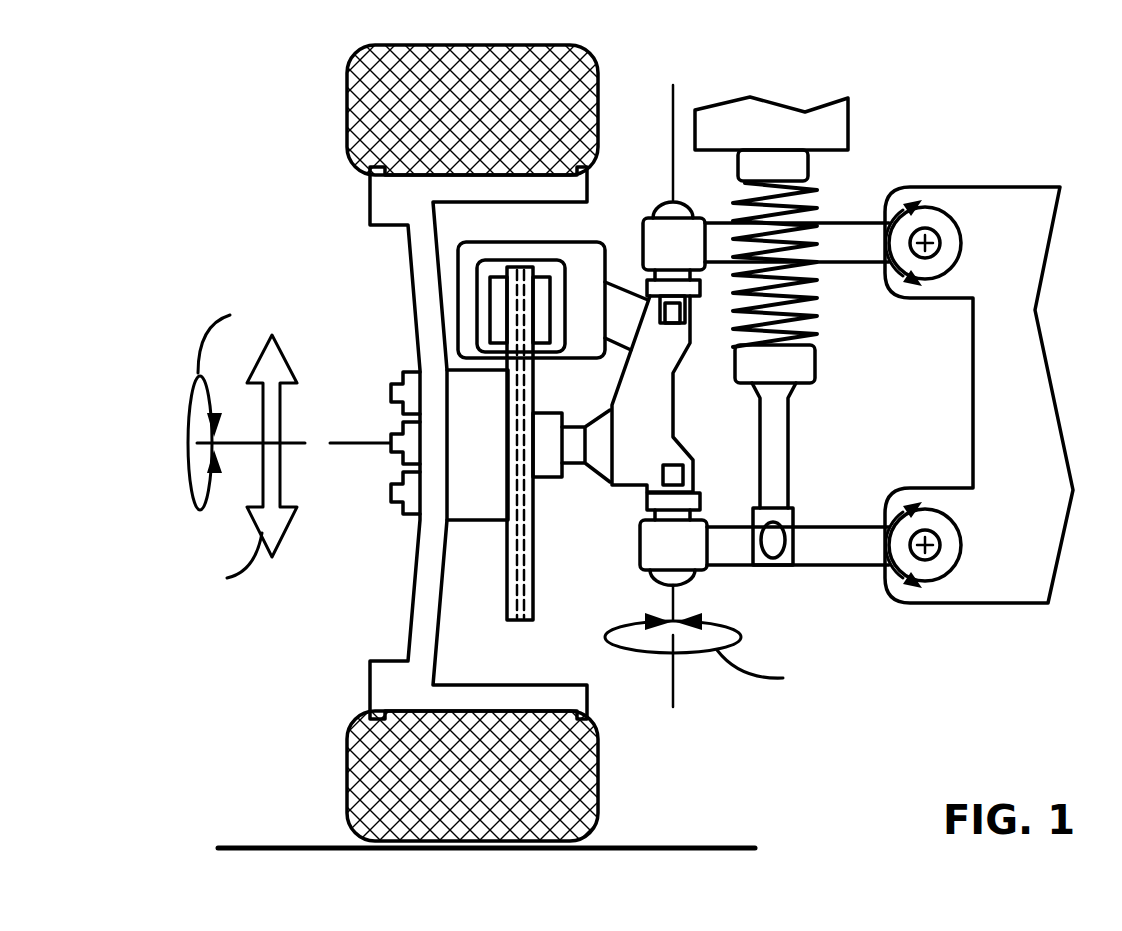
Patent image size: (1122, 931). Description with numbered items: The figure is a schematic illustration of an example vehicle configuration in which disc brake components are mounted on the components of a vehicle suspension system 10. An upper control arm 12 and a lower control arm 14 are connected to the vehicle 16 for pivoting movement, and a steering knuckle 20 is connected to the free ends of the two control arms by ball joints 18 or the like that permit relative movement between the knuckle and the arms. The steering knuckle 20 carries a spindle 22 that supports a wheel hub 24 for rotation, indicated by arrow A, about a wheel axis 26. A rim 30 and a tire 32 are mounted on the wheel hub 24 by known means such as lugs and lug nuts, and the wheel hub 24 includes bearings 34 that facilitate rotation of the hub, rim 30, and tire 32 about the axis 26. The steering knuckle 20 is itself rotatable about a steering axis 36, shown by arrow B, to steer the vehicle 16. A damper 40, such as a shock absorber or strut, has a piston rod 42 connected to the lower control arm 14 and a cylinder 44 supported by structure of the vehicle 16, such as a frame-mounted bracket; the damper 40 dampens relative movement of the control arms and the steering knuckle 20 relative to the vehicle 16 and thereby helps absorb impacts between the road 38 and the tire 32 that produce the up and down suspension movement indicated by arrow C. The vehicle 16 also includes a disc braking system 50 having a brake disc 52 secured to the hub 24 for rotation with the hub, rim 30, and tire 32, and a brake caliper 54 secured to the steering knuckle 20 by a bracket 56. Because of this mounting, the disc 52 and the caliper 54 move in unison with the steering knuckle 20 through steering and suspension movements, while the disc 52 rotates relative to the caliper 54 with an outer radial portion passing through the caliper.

The vehicle suspension system 10 is at (946, 128).
The upper control arm 12 is at (845, 285).
The lower control arm 14 is at (807, 540).
The vehicle 16 is at (772, 118).
The ball joint 18 is at (690, 213).
The steering knuckle 20 is at (647, 408).
The spindle 22 is at (580, 453).
The wheel hub 24 is at (478, 482).
The wheel axis 26 is at (367, 443).
The rim 30 is at (410, 282).
The tire 32 is at (363, 145).
The bearings 34 is at (541, 460).
The steering axis 36 is at (673, 683).
The road 38 is at (305, 843).
The damper 40 is at (788, 372).
The piston rod 42 is at (777, 453).
The cylinder 44 is at (833, 250).
The disc braking system 50 is at (469, 228).
The brake disc 52 is at (506, 565).
The brake caliper 54 is at (580, 265).
The bracket 56 is at (622, 310).